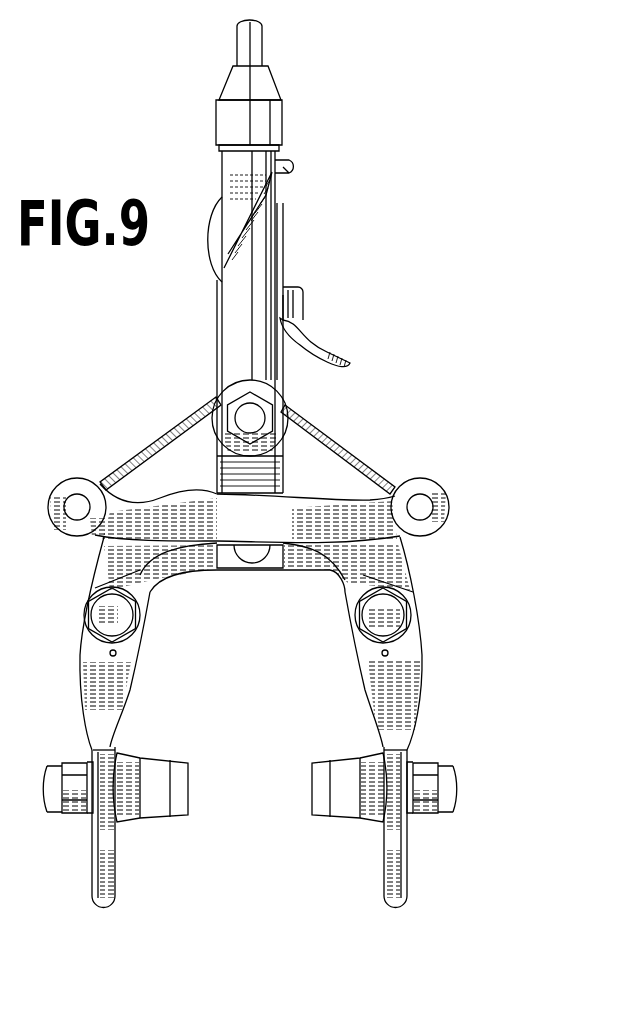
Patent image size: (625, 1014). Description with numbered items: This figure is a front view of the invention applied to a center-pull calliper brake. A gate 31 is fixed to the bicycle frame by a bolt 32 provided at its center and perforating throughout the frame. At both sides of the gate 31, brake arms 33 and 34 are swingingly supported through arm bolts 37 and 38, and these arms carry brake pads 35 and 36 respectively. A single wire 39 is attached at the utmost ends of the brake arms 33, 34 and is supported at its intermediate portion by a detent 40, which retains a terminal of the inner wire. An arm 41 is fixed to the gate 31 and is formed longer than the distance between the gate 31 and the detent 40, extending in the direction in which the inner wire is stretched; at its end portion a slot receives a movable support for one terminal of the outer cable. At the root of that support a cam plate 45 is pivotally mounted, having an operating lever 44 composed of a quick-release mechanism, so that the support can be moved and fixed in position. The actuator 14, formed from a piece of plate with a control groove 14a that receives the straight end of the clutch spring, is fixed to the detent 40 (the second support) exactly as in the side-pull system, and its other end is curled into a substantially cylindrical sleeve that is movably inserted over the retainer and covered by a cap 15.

The actuator 14 is at (262, 260).
The control groove 14a is at (258, 212).
The cap 15 is at (281, 124).
The gate 31 is at (188, 567).
The bolt 32 is at (217, 393).
The brake arm 33 is at (410, 688).
The brake arm 34 is at (88, 692).
The brake pad 35 is at (337, 810).
The brake pad 36 is at (163, 812).
The arm bolt 37 is at (412, 610).
The arm bolt 38 is at (100, 611).
The single wire 39 is at (347, 443).
The detent 40 is at (277, 403).
The arm 41 is at (282, 337).
The operating lever 44 is at (343, 355).
The cam plate 45 is at (207, 238).